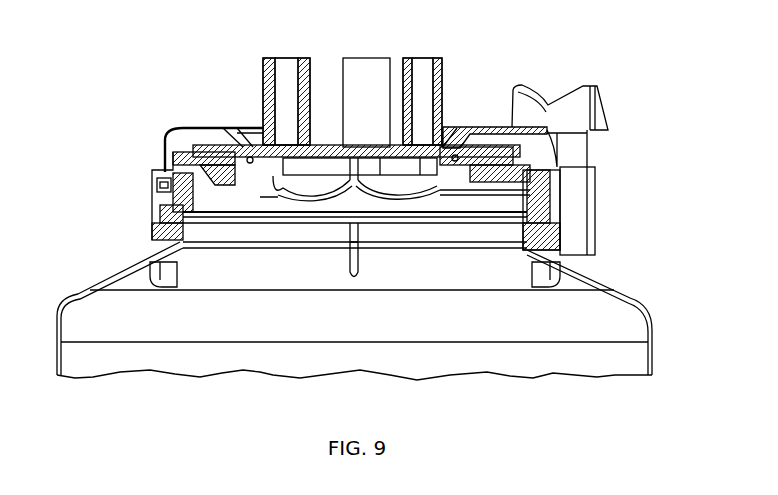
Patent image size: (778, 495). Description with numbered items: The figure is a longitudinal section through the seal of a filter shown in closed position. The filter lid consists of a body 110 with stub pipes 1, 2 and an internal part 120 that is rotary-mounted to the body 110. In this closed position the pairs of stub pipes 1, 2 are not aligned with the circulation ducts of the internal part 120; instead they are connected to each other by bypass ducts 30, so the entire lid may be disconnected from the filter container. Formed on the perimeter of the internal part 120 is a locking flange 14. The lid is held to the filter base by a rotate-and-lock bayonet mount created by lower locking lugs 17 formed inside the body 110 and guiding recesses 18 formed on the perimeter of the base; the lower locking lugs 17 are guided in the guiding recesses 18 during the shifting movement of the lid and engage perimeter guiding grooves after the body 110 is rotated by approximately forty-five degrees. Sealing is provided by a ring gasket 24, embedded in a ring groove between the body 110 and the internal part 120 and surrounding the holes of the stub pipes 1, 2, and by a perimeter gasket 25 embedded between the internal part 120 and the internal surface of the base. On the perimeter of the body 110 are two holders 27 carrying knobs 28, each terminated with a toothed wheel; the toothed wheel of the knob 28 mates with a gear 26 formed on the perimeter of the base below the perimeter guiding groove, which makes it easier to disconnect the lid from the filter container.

The stub pipe 1 is at (367, 57).
The stub pipe 2 is at (433, 58).
The locking flange 14 is at (207, 148).
The lower locking lug 17 is at (165, 200).
The guiding recess 18 is at (167, 193).
The ring gasket 24 is at (460, 157).
The perimeter gasket 25 is at (155, 165).
The gear 26 is at (557, 233).
The holder 27 is at (590, 188).
The knob 28 is at (538, 90).
The bypass duct 30 is at (322, 163).
The body 110 is at (227, 147).
The internal part 120 is at (152, 232).